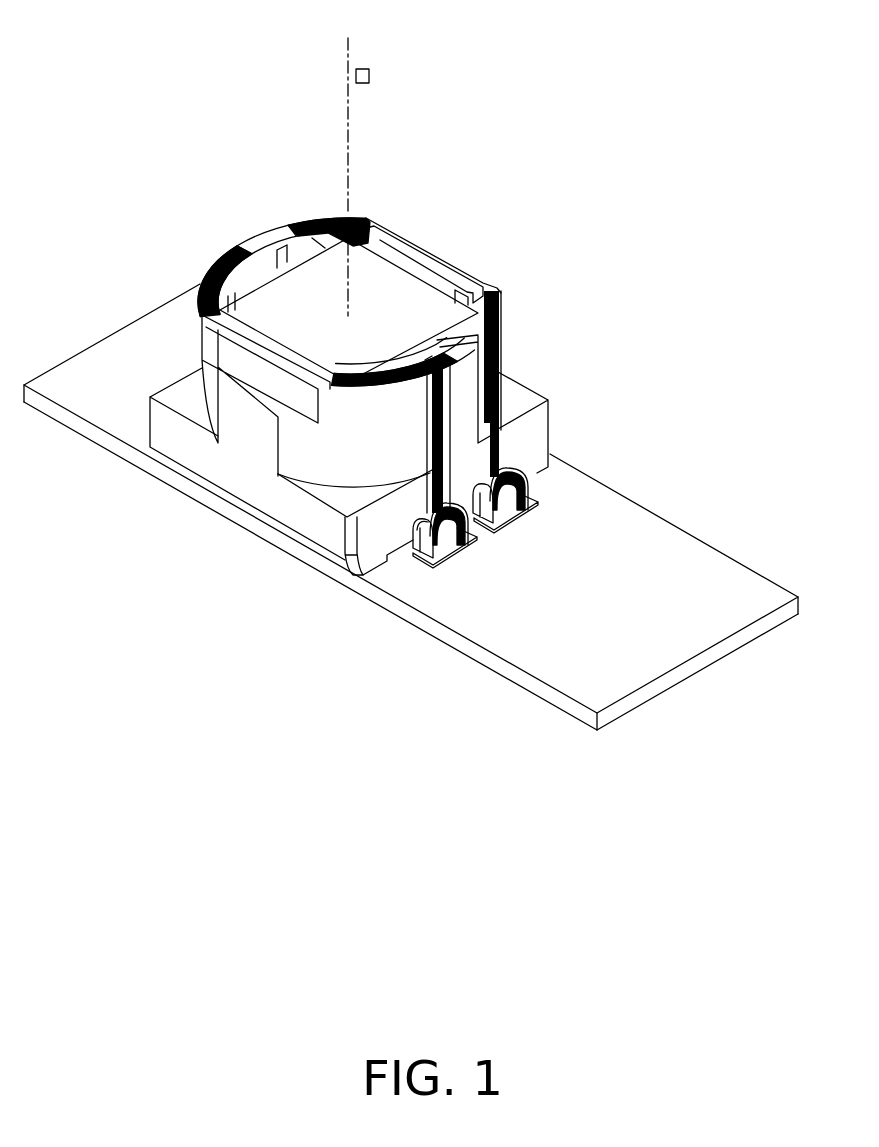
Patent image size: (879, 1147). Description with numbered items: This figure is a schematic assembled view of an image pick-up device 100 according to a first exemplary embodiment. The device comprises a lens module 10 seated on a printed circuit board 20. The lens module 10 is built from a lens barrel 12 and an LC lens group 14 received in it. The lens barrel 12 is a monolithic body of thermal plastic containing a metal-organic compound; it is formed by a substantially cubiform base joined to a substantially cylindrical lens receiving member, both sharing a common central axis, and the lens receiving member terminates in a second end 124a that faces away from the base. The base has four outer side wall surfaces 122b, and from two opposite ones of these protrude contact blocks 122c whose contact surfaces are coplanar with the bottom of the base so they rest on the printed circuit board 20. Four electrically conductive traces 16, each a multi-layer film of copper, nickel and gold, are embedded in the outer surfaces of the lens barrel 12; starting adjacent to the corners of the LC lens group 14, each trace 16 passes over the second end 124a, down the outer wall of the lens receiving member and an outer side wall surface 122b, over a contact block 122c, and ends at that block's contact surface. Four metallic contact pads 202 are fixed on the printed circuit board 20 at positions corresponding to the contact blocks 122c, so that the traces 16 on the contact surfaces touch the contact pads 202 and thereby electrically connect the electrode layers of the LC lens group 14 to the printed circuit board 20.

The image pick-up device 100 is at (240, 76).
The lens module 10 is at (548, 198).
The lens barrel 12 is at (478, 290).
The LC lens group 14 is at (397, 288).
The electrically conductive trace 16 is at (497, 364).
The printed circuit board 20 is at (497, 627).
The contact pad 202 is at (527, 512).
The outer side wall surface 122b is at (374, 537).
The contact block 122c is at (428, 547).
The second end 124a is at (380, 223).